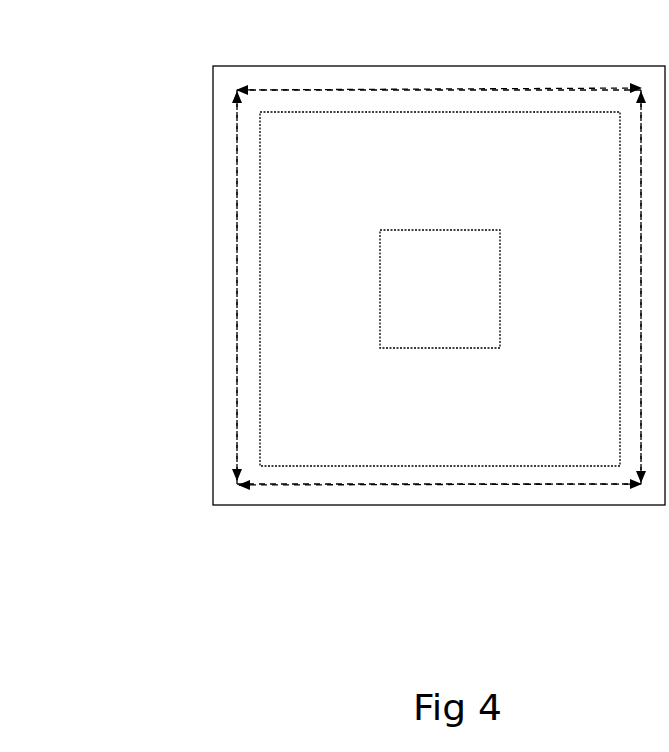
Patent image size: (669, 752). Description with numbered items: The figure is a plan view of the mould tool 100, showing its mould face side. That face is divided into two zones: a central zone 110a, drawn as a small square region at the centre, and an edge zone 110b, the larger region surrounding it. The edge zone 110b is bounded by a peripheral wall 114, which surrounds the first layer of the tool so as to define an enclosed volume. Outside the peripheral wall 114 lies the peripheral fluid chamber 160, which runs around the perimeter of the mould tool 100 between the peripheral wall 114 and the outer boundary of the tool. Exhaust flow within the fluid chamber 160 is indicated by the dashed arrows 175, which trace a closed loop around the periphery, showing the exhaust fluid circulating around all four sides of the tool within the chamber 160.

The mould tool 100 is at (150, 67).
The peripheral fluid chamber 160 is at (212, 113).
The dashed arrows 175 is at (236, 185).
The peripheral wall 114 is at (260, 254).
The edge zone 110b is at (343, 160).
The central zone 110a is at (452, 291).